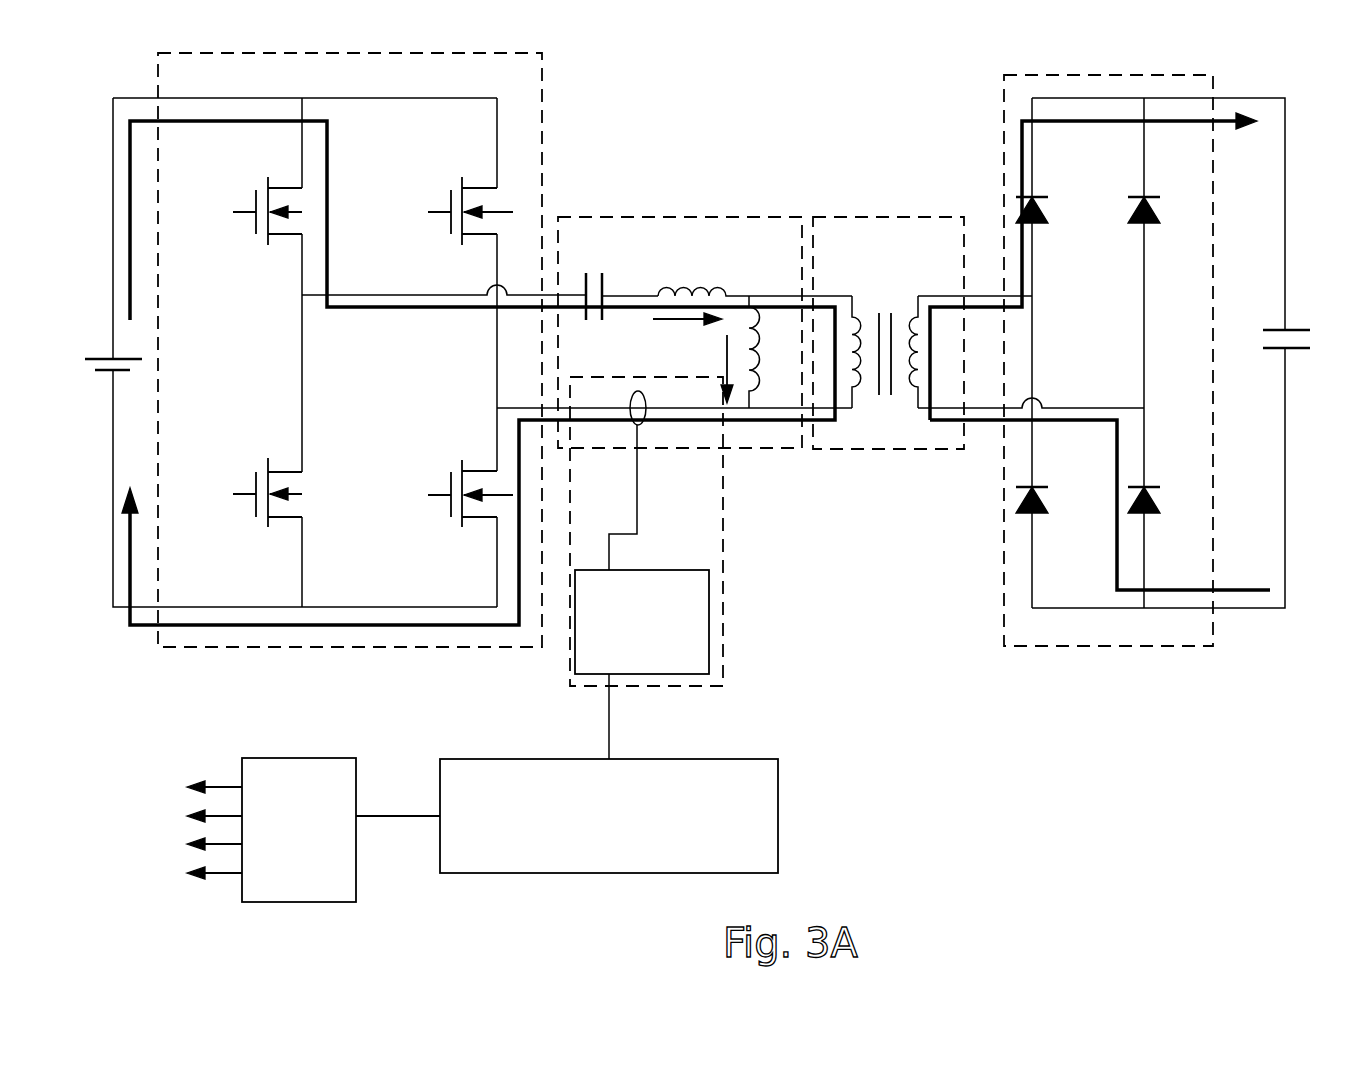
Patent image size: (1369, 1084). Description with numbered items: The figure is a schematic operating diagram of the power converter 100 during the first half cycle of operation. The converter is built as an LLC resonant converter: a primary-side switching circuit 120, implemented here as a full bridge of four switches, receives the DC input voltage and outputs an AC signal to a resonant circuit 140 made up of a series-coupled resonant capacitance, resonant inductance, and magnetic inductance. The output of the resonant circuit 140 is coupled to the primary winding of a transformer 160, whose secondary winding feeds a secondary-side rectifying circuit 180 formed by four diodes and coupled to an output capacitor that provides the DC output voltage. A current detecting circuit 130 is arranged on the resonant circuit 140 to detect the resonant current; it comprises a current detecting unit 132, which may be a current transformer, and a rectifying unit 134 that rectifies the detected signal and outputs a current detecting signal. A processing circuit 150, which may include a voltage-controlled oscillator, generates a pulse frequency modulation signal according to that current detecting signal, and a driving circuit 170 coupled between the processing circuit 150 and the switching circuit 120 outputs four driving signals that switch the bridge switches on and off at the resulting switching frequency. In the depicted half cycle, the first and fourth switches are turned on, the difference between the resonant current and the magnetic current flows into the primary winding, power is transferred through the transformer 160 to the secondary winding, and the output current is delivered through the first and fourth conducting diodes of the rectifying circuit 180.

The power converter 100 is at (86, 65).
The primary-side switching circuit 120 is at (542, 158).
The current detecting circuit 130 is at (723, 590).
The current detecting unit 132 is at (640, 425).
The rectifying unit 134 is at (624, 663).
The resonant circuit 140 is at (750, 217).
The processing circuit 150 is at (591, 842).
The transformer 160 is at (863, 217).
The driving circuit 170 is at (281, 870).
The secondary-side rectifying circuit 180 is at (1090, 646).